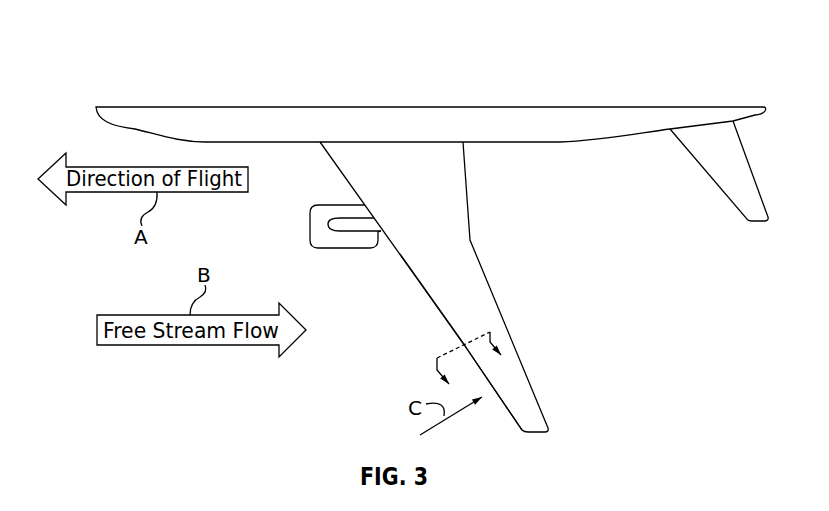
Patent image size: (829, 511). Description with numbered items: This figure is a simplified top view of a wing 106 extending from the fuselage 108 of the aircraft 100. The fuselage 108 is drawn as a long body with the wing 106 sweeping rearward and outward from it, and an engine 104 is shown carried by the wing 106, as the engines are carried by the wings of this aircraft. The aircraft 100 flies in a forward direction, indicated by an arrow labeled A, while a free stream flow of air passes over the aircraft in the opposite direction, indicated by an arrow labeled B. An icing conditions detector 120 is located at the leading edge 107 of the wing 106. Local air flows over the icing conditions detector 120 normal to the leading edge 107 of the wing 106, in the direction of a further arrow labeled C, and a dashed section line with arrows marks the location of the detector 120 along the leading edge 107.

The aircraft 100 is at (110, 63).
The engine 104 is at (335, 248).
The wing 106 is at (490, 282).
The leading edge 107 is at (443, 325).
The fuselage 108 is at (237, 106).
The icing conditions detector 120 is at (464, 342).